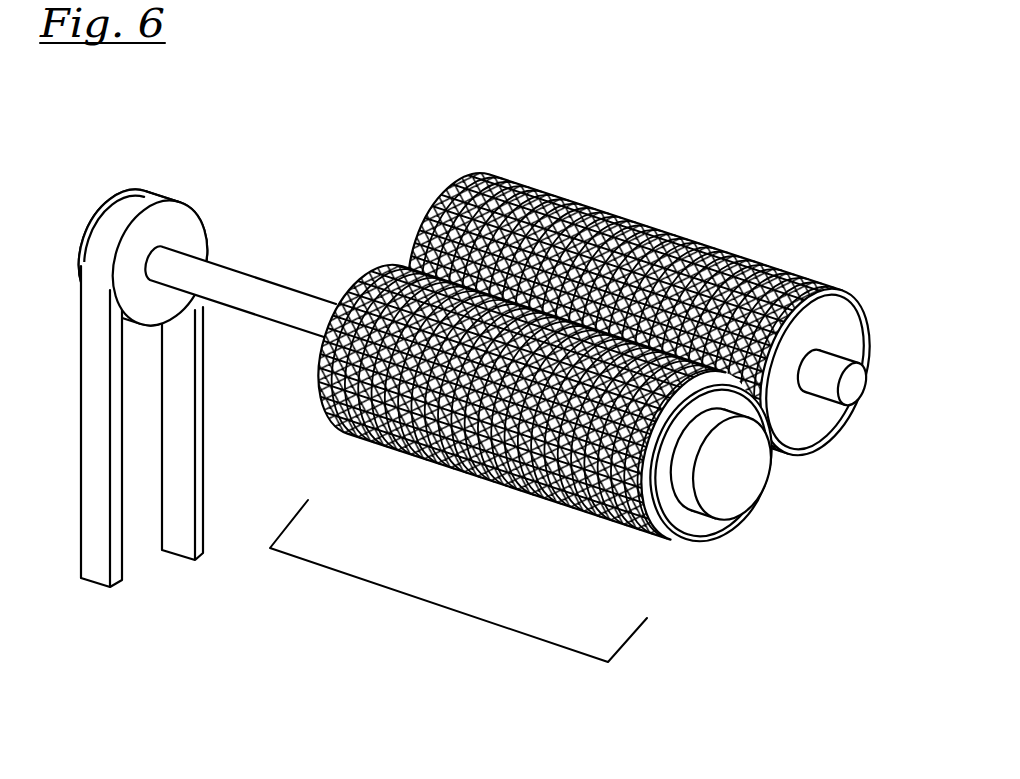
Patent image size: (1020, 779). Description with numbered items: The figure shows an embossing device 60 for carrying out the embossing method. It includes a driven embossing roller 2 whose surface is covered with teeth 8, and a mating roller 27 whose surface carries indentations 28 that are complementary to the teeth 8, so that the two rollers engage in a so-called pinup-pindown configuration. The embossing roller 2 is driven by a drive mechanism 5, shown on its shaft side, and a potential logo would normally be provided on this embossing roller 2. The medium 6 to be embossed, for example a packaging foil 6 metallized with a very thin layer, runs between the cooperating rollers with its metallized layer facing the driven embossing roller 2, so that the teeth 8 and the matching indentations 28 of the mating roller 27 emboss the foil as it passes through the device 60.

The first embossing roller 2 is at (603, 312).
The drive mechanism 5 is at (135, 205).
The medium 6 is at (554, 312).
The teeth 8 is at (545, 500).
The mating roller 27 is at (648, 286).
The indentations 28 is at (695, 247).
The device 60 is at (440, 603).